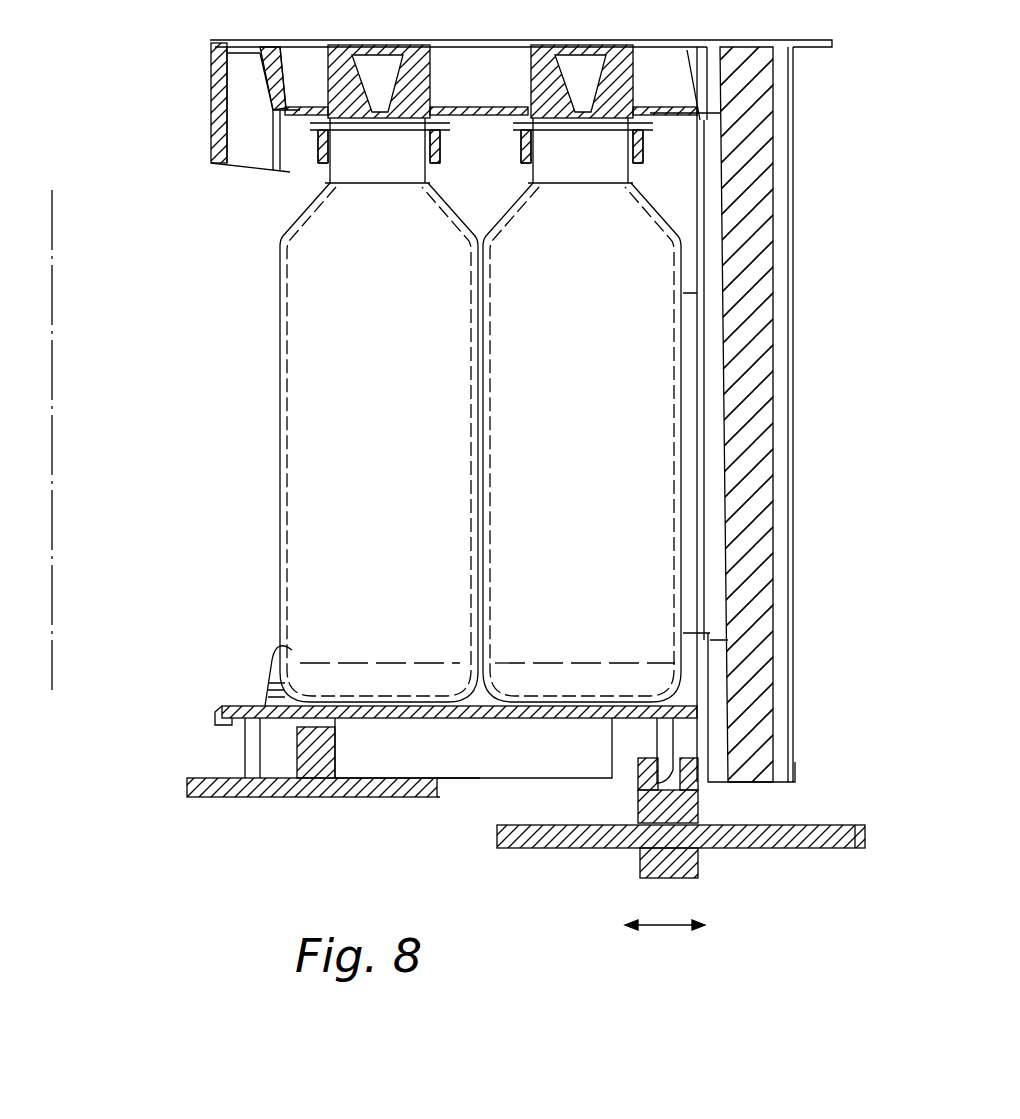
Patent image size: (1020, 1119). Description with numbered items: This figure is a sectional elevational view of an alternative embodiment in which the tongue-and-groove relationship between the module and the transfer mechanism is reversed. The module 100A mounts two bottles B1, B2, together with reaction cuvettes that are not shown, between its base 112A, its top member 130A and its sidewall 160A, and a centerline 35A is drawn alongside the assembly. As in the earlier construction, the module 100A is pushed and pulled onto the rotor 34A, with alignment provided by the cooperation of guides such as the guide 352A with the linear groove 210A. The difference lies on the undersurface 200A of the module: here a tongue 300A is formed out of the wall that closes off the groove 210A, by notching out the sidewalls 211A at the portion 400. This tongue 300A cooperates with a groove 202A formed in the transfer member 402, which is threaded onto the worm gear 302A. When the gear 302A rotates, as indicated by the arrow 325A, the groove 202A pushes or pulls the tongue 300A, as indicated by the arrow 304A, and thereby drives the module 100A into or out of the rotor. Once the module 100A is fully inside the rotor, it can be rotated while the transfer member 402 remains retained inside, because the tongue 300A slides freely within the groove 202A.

The top member 130A is at (183, 72).
The module 100A is at (243, 333).
The bottle B1 is at (400, 345).
The bottle B2 is at (608, 345).
The central axis 35A is at (55, 461).
The sidewall 160A is at (752, 396).
The tongue 300A is at (655, 745).
The sidewalls 211A is at (572, 763).
The base 112A is at (218, 709).
The undersurface 200A is at (187, 753).
The guide 352A is at (290, 745).
The linear groove 210A is at (358, 797).
The rotor 34A is at (415, 798).
The portion 400 is at (617, 747).
The groove 202A is at (640, 808).
The worm gear 302A is at (765, 825).
The transfer member 402 is at (700, 870).
The arrow 325A is at (867, 790).
The arrow 304A is at (665, 946).